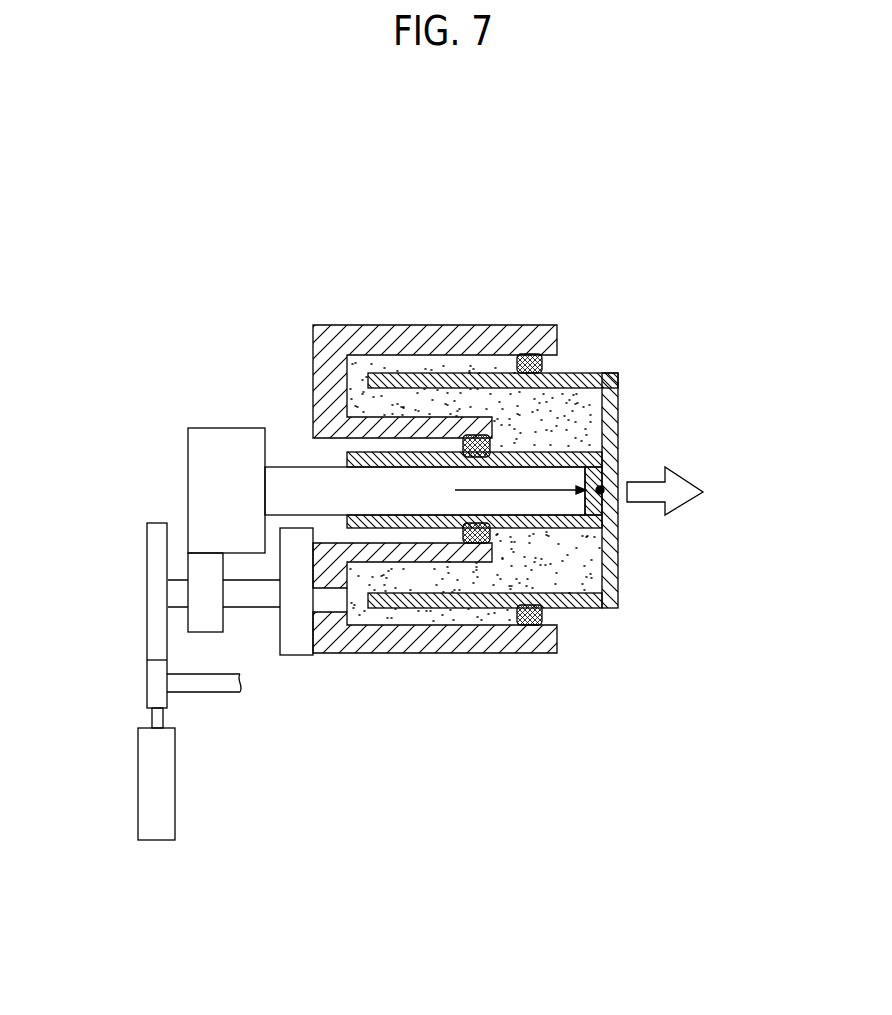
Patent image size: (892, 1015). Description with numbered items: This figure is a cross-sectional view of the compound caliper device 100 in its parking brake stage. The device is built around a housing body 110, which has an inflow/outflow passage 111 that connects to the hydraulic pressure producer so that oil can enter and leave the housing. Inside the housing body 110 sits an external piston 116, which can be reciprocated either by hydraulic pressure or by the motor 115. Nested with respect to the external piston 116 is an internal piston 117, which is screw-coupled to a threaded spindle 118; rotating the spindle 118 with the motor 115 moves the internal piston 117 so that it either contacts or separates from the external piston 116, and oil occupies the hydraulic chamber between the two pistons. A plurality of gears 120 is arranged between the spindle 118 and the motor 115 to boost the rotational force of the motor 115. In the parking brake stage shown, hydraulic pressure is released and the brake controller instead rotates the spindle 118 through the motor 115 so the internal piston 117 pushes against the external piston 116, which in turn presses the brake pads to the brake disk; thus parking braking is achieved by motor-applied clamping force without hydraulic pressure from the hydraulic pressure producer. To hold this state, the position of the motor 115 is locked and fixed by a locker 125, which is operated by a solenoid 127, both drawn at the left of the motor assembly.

The compound caliper device 100 is at (378, 270).
The housing body 110 is at (478, 325).
The inflow/outflow passage 111 is at (322, 620).
The motor 115 is at (297, 665).
The external piston 116 is at (588, 372).
The internal piston 117 is at (578, 525).
The spindle 118 is at (445, 498).
The gears 120 is at (171, 388).
The locker 125 is at (128, 685).
The solenoid 127 is at (177, 783).